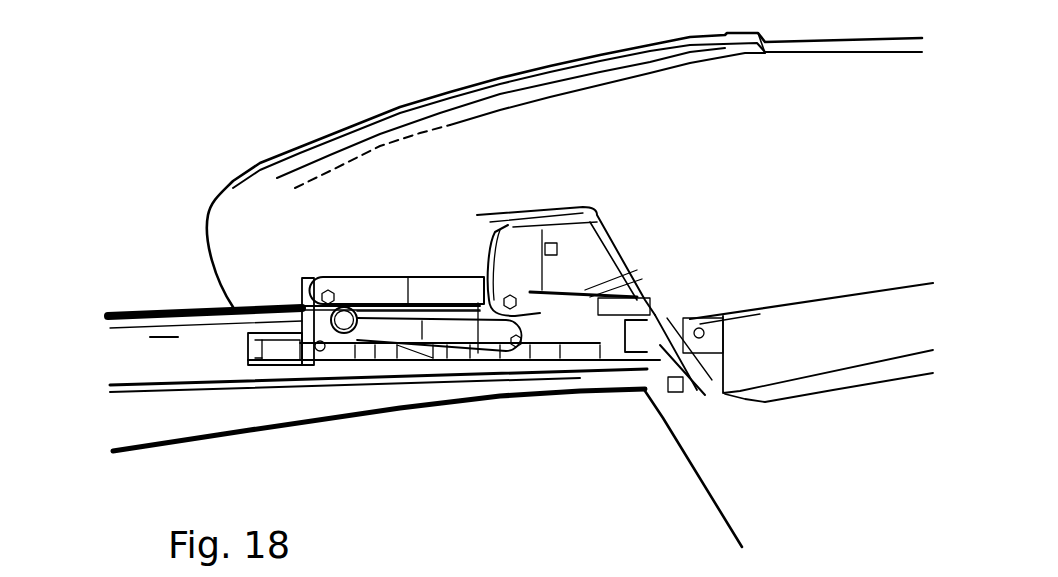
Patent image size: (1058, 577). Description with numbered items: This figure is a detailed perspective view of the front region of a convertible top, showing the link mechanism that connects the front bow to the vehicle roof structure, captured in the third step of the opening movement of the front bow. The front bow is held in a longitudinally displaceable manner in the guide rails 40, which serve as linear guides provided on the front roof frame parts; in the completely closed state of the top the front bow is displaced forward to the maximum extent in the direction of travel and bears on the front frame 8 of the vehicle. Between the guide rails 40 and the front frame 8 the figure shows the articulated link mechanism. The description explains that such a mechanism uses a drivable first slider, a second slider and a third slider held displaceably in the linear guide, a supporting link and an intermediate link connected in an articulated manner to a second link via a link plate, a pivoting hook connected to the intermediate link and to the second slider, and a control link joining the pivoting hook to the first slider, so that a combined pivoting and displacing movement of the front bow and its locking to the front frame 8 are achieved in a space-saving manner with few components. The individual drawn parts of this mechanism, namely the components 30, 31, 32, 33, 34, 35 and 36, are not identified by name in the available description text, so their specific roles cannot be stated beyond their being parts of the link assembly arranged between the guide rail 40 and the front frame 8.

The front frame 8 is at (750, 370).
The support strut 30 is at (683, 362).
The upper link arm 31 is at (387, 285).
The lower link arm 32 is at (380, 352).
The housing bracket 33 is at (495, 245).
The guide bracket 34 is at (263, 362).
The pivot bracket 35 is at (297, 362).
The base plate 36 is at (473, 360).
The guide rails 40 is at (213, 355).